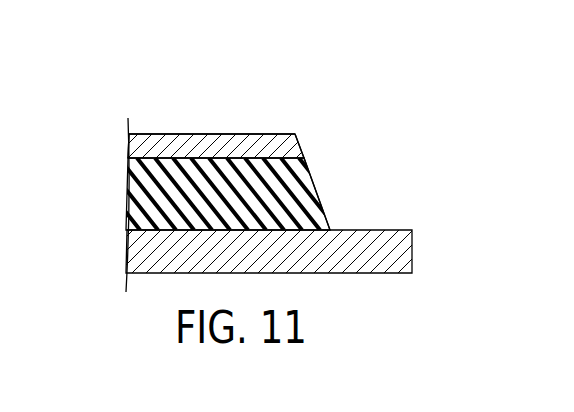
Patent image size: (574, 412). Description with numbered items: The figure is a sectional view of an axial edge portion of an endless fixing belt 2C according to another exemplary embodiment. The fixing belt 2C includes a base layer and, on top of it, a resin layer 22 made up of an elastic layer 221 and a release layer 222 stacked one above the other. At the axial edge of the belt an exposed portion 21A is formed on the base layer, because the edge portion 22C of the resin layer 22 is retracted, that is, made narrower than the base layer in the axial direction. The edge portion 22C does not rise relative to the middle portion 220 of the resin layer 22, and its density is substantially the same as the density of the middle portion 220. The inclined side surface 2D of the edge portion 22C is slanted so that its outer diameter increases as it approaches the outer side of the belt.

The resin layer 22 is at (115, 137).
The middle portion 220 is at (145, 131).
The elastic layer 221 is at (208, 175).
The release layer 222 is at (241, 145).
The fixing belt 2C is at (179, 118).
The edge portion 22C is at (282, 128).
The side surface 2D is at (316, 183).
The exposed portion 21A is at (396, 223).